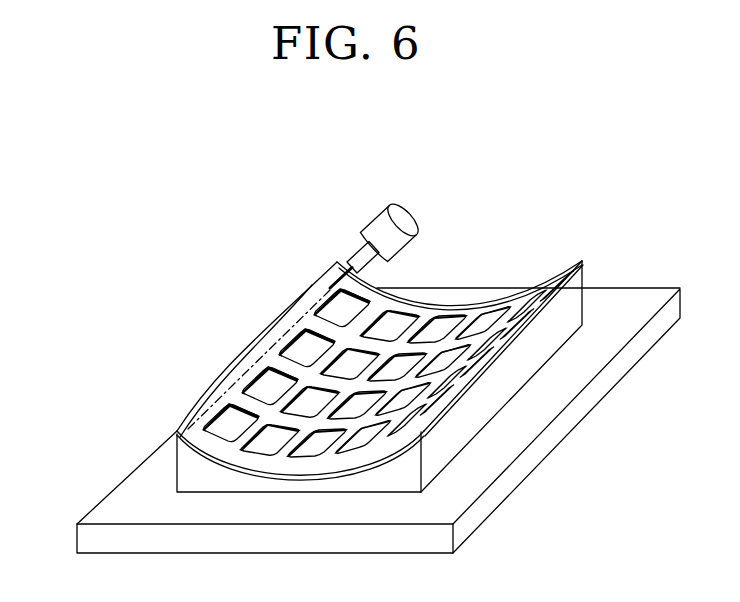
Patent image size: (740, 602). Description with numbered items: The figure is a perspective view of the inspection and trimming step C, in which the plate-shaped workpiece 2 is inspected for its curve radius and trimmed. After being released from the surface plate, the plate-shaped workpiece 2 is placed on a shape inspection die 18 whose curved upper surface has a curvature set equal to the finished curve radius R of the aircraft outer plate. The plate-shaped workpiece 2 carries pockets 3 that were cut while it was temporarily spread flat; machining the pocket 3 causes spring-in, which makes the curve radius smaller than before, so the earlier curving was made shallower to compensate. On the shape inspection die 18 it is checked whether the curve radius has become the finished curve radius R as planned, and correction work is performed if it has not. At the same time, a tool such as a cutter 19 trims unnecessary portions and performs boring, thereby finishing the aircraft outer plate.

The plate-shaped workpiece 2 is at (430, 307).
The pocket 3 is at (265, 368).
The shape inspection die 18 is at (192, 474).
The cutter 19 is at (370, 222).
The inspection and trimming step C is at (128, 330).
The finished curve radius R is at (232, 410).